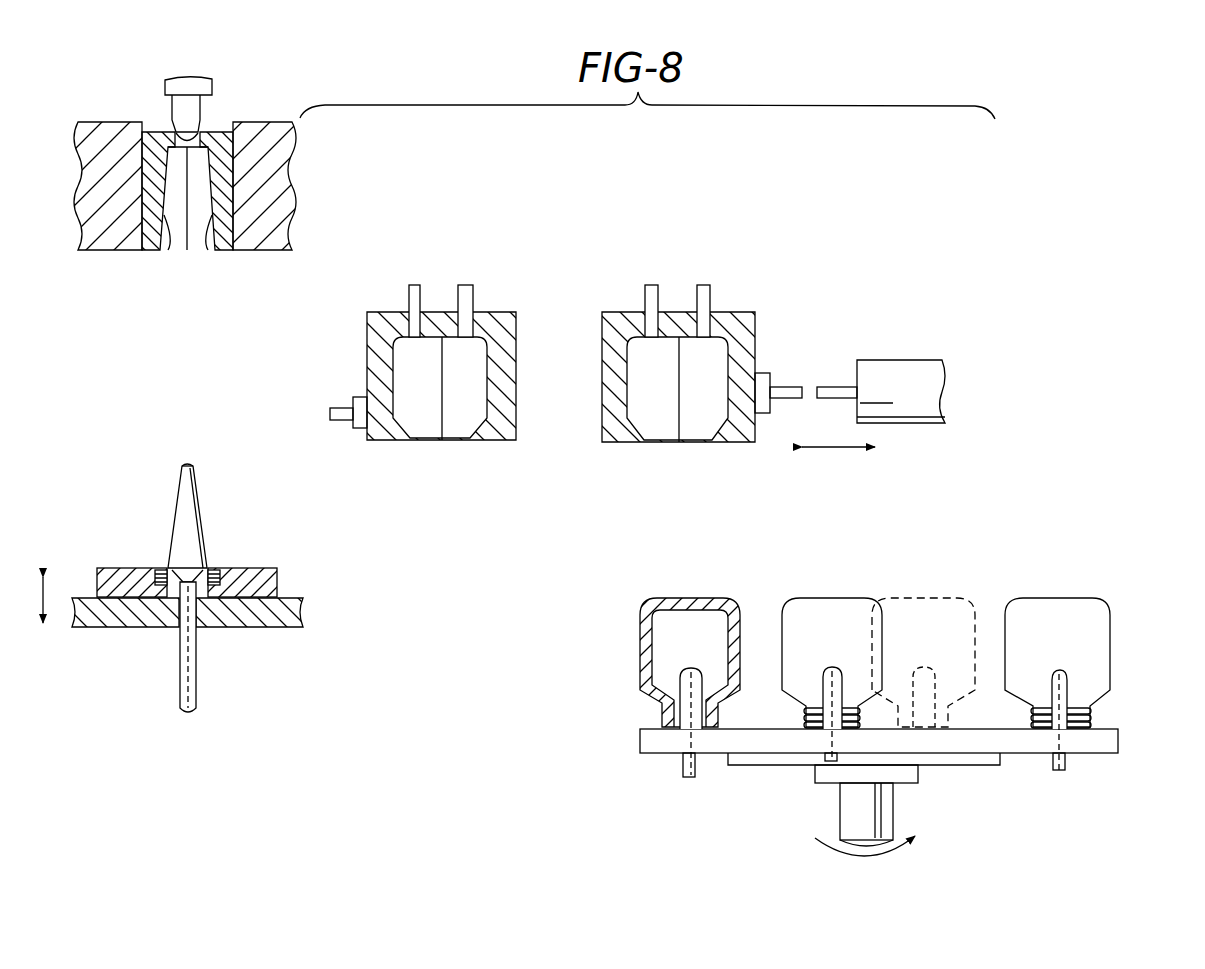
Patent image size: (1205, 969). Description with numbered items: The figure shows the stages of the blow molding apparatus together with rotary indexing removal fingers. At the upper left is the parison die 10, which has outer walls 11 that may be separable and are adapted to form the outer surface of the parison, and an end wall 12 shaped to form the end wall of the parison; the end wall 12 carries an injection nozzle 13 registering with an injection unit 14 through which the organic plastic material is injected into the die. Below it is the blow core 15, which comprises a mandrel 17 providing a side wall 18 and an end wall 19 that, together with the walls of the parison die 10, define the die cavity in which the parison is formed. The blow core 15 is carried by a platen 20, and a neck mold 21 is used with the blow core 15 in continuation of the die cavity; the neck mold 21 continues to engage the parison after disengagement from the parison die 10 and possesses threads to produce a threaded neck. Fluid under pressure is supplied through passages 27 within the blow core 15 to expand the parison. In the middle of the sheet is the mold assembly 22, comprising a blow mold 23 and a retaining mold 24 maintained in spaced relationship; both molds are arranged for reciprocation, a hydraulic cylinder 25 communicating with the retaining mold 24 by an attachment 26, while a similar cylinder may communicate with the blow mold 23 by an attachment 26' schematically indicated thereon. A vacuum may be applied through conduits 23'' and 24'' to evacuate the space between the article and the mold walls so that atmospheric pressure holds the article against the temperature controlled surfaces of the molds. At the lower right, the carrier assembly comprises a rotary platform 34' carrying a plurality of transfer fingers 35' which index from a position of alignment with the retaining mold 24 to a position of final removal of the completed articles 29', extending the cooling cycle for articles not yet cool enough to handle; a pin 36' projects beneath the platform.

The parison die 10 is at (138, 212).
The outer walls 11 is at (190, 235).
The end wall 12 is at (172, 138).
The injection nozzle 13 is at (200, 132).
The injection unit 14 is at (198, 90).
The blow core 15 is at (203, 508).
The mandrel 17 is at (197, 697).
The side wall 18 is at (205, 544).
The end wall 19 is at (186, 464).
The platen 20 is at (108, 615).
The neck mold 21 is at (265, 574).
The mold assembly 22 is at (565, 300).
The blow mold 23 is at (451, 348).
The conduit 23'' is at (441, 286).
The retaining mold 24 is at (696, 353).
The conduit 24'' is at (677, 286).
The hydraulic cylinder 25 is at (880, 375).
The attachment 26 is at (795, 369).
The attachment 26' is at (332, 378).
The passages 27 is at (196, 656).
The completed articles 29' is at (908, 639).
The rotary platform 34' is at (881, 792).
The transfer fingers 35' is at (873, 699).
The pin shank 36' is at (857, 791).